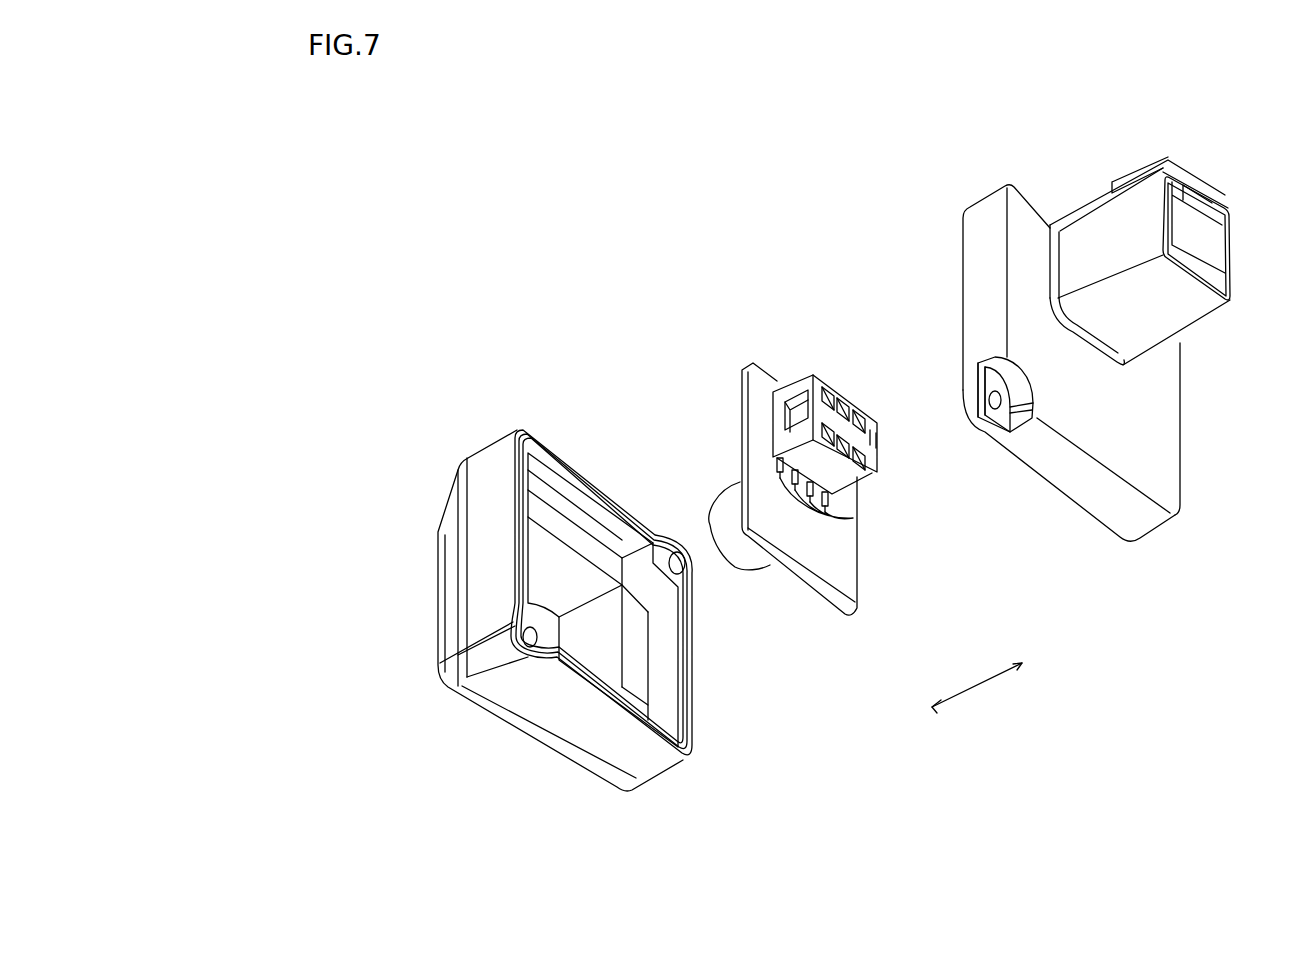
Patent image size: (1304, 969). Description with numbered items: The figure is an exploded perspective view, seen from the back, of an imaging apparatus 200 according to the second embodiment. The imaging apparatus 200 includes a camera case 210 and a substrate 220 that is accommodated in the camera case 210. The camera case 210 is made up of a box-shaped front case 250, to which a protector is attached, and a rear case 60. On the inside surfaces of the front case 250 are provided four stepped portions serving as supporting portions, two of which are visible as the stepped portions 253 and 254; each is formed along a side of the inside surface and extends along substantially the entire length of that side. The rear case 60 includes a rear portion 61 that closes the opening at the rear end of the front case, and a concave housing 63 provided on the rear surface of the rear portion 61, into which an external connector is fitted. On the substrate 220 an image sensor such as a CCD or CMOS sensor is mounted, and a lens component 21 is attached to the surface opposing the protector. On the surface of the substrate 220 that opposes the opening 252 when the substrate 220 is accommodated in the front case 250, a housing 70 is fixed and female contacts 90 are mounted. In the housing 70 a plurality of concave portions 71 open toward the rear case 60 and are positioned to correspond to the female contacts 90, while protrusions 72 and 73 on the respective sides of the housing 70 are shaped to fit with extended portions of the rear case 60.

The imaging apparatus 200 is at (731, 132).
The camera case 210 is at (658, 225).
The front case 250 is at (498, 413).
The opening 252 is at (595, 514).
The stepped portion 253 is at (567, 527).
The stepped portion 254 is at (635, 658).
The rear case 60 is at (932, 245).
The rear portion 61 is at (1163, 475).
The concave housing 63 is at (1183, 315).
The substrate 220 is at (843, 563).
The lens component 21 is at (747, 553).
The housing 70 is at (798, 381).
The concave portions 71 is at (853, 403).
The protrusion 72 is at (795, 403).
The protrusion 73 is at (873, 450).
The female contacts 90 is at (853, 518).